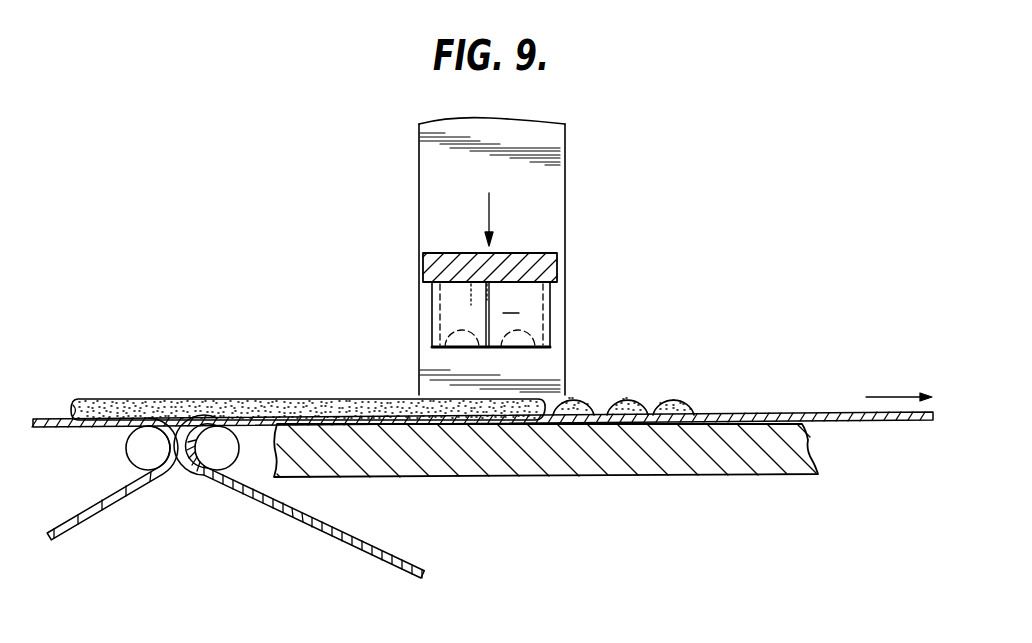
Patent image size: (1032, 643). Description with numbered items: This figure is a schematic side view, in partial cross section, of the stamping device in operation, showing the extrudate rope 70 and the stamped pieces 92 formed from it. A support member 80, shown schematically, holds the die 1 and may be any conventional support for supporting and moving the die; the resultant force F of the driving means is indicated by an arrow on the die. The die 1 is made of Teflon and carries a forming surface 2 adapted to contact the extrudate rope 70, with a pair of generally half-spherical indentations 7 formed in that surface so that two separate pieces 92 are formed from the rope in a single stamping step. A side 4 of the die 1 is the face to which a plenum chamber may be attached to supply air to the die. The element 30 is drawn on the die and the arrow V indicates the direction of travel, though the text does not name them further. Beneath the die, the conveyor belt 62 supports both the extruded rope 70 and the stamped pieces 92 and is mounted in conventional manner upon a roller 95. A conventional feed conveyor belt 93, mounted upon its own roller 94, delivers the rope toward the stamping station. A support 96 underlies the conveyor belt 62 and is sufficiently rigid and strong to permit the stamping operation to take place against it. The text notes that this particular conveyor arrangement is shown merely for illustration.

The support member 80 is at (430, 186).
The piston / pressure plate 30 is at (552, 265).
The forming surface 2 is at (437, 348).
The side 4 is at (511, 300).
The half-spherical indentations 7 is at (445, 332).
The die 1 is at (410, 291).
The extrudate rope 70 is at (160, 400).
The stamped pieces 92 is at (668, 396).
The conveyor belt 62 is at (740, 412).
The roller 94 is at (126, 450).
The roller 95 is at (239, 450).
The feed conveyor belt 93 is at (162, 476).
The support 96 is at (726, 455).
The resultant force F is at (487, 201).
The velocity direction V is at (892, 397).